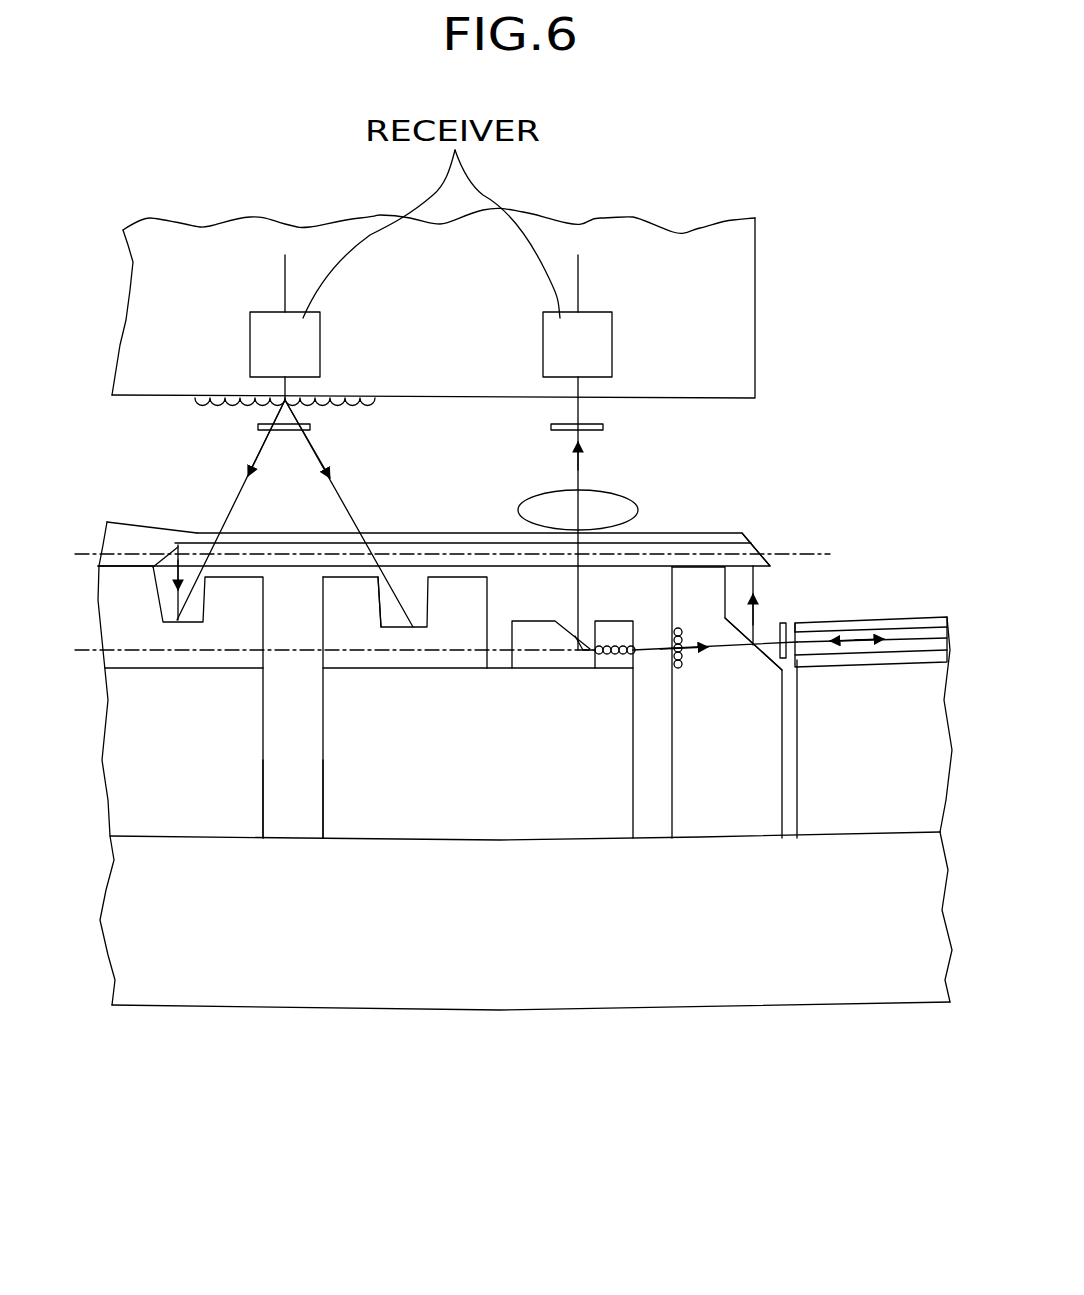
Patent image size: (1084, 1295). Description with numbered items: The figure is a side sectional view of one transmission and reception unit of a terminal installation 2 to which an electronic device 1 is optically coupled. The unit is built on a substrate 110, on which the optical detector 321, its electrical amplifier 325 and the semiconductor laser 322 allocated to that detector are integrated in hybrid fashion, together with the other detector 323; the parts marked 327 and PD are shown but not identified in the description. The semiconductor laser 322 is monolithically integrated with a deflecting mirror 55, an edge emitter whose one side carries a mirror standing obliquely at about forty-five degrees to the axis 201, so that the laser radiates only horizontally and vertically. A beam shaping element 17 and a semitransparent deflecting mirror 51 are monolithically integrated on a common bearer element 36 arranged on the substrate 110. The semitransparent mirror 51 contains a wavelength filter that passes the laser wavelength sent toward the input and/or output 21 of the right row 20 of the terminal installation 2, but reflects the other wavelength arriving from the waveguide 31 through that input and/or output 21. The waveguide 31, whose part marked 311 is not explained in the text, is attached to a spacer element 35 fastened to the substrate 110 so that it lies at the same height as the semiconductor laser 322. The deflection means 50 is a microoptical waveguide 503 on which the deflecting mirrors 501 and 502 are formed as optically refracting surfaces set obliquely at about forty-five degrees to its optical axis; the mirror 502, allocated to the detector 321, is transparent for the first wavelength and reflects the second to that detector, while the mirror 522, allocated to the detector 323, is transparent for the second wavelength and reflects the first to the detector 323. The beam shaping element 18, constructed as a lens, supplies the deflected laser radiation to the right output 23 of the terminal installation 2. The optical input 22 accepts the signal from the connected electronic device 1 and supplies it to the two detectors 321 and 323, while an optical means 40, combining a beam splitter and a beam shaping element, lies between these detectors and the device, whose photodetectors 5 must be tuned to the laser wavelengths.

The electronic device 1 is at (755, 341).
The terminal installation 2 is at (824, 481).
The photodetector 5 is at (320, 355).
The beam shaping element 17 is at (684, 632).
The beam shaping element 18 is at (600, 494).
The right row 20 is at (754, 540).
The input and/or output 21 is at (790, 662).
The optical input 22 is at (283, 431).
The right output 23 is at (590, 419).
The waveguide 31 is at (923, 630).
The fiber end 311 is at (797, 620).
The spacer element 35 is at (873, 788).
The bearer element 36 is at (668, 785).
The optical means 40 is at (357, 412).
The deflection means 50 is at (485, 526).
The deflecting mirror 501 is at (693, 553).
The deflecting mirror 502 is at (417, 533).
The microoptical waveguide 503 is at (295, 533).
The semitransparent deflecting mirror 51 is at (762, 675).
The deflecting mirror 55 is at (584, 643).
The substrate 110 is at (743, 973).
The axis 201 is at (403, 655).
The optical detector 321 is at (448, 593).
The semiconductor laser 322 is at (615, 633).
The optical detector 323 is at (233, 590).
The electrical amplifier 325 is at (325, 832).
The slot 327 is at (263, 830).
The deflecting mirror 522 is at (212, 533).
The photodiode PD is at (377, 660).